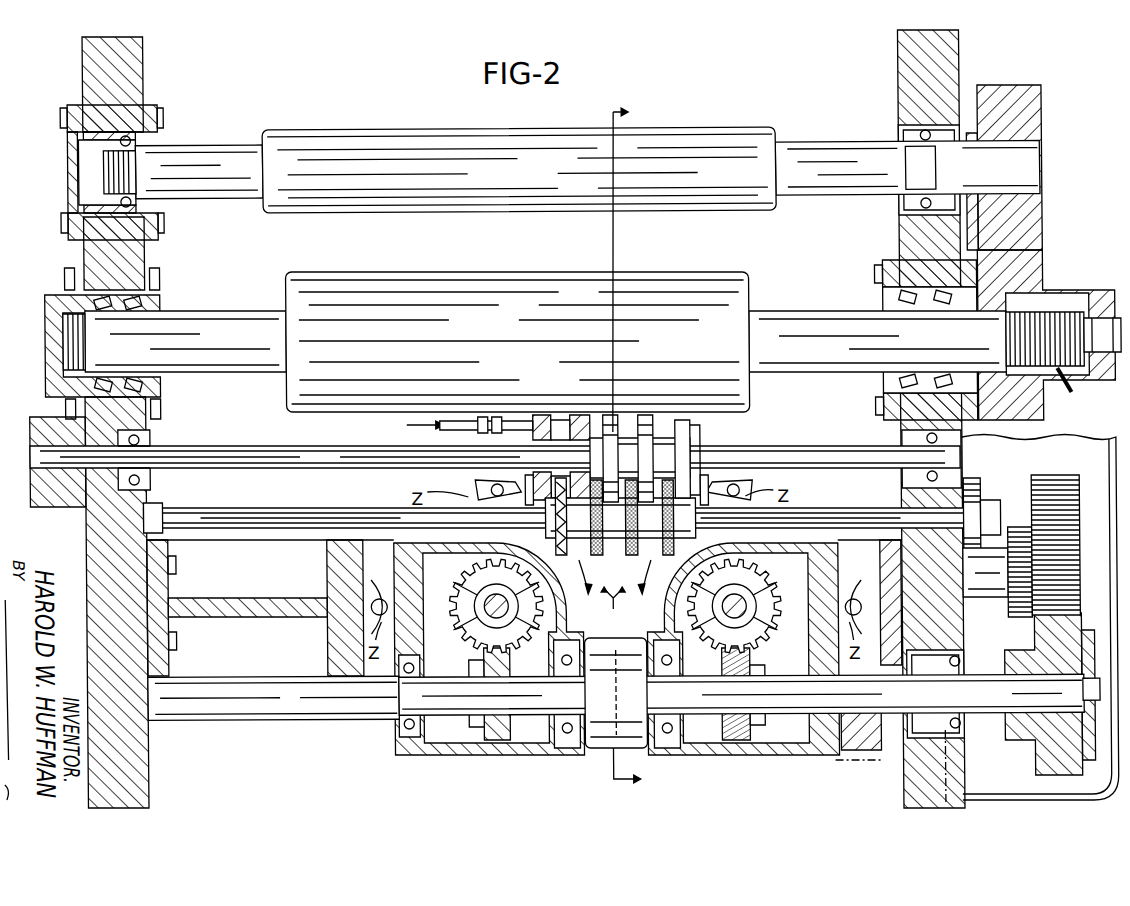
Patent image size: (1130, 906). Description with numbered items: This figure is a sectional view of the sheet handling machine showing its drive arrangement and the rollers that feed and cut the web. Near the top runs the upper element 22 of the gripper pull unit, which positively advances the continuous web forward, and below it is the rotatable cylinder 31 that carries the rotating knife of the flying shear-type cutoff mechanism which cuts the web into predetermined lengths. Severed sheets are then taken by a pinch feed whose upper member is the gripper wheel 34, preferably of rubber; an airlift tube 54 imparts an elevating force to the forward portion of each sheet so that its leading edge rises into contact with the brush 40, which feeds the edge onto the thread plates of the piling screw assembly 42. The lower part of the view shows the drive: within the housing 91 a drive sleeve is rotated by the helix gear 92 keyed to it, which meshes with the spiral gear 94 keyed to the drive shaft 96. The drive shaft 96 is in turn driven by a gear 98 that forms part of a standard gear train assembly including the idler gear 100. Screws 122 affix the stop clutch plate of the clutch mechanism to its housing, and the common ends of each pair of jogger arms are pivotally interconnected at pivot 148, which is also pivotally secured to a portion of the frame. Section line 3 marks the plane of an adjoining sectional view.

The section line 3- 3 is at (630, 445).
The upper element of gripper pull unit 22 is at (352, 138).
The rotatable cylinder 31 is at (384, 284).
The gripper wheel 34 is at (650, 418).
The brush 40 is at (596, 546).
The piling screw assembly 42 is at (613, 608).
The airlift tube 54 is at (506, 484).
The housing 91 is at (412, 618).
The helix gear 92 is at (470, 582).
The spiral gear 94 is at (482, 728).
The drive shaft 96 is at (329, 716).
The gear 98 is at (1038, 746).
The idler gear 100 is at (1070, 495).
The screws 122 is at (480, 622).
The pivotal interconnection of jogger arms 148 is at (368, 610).